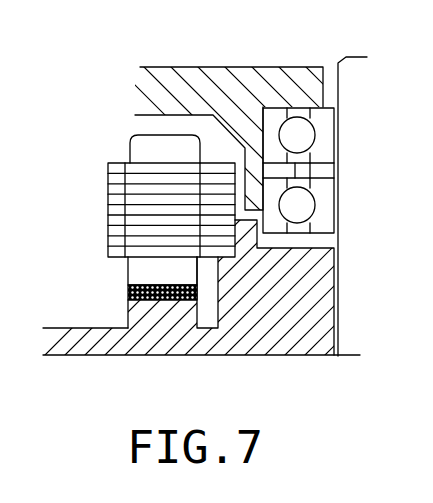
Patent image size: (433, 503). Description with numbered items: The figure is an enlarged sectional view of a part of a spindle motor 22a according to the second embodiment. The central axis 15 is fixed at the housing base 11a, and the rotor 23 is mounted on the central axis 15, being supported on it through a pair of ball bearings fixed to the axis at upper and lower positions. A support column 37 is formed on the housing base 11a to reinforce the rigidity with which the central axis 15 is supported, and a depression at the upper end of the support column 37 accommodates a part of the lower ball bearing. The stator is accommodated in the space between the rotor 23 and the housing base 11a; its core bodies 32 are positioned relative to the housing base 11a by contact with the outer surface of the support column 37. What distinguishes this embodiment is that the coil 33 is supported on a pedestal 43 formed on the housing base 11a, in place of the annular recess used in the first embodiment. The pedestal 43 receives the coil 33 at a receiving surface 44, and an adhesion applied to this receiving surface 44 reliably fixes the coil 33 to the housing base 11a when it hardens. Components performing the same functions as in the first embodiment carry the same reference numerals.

The spindle motor 22a is at (93, 87).
The rotor 23 is at (168, 67).
The central axis 15 is at (343, 62).
The core body 32 is at (107, 202).
The coil 33 is at (127, 268).
The receiving surface 44 is at (128, 292).
The pedestal 43 is at (127, 317).
The support column 37 is at (327, 292).
The housing base 11a is at (138, 355).